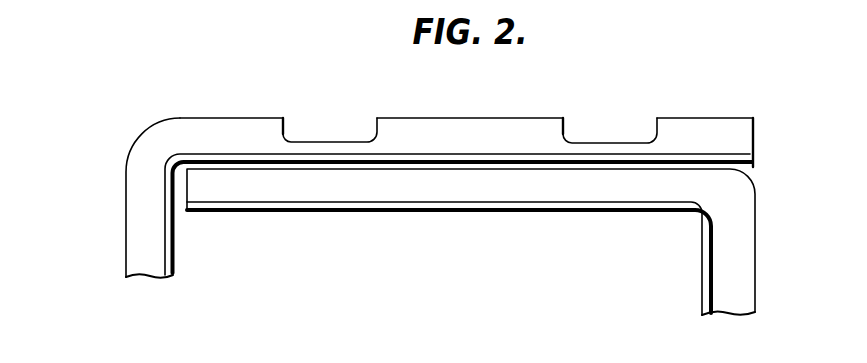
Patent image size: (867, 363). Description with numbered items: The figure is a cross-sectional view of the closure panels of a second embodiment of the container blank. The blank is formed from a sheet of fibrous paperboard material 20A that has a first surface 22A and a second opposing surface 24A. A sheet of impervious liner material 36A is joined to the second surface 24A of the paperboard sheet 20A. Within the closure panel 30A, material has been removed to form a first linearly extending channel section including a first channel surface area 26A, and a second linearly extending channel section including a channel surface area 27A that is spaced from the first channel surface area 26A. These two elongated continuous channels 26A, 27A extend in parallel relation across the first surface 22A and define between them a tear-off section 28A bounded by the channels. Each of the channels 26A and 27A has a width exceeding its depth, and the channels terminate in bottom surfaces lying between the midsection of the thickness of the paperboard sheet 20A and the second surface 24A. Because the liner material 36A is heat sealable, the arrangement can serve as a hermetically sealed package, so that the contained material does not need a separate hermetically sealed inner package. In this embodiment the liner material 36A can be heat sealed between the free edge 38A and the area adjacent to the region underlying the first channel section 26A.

The paperboard sheet 20A is at (147, 157).
The first surface 22A is at (126, 235).
The second opposing surface 24A is at (163, 250).
The first channel surface area 26A is at (597, 143).
The second channel surface area 27A is at (330, 142).
The tear-off section 28A is at (455, 119).
The closure panel 30A is at (235, 138).
The impervious liner material 36A is at (165, 189).
The free edge 38A is at (757, 137).